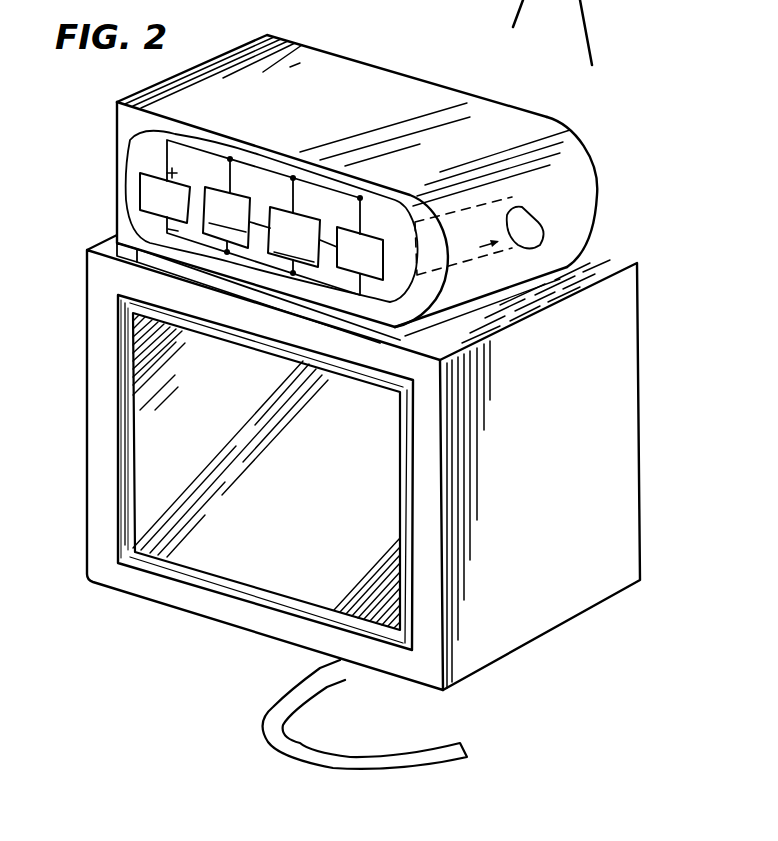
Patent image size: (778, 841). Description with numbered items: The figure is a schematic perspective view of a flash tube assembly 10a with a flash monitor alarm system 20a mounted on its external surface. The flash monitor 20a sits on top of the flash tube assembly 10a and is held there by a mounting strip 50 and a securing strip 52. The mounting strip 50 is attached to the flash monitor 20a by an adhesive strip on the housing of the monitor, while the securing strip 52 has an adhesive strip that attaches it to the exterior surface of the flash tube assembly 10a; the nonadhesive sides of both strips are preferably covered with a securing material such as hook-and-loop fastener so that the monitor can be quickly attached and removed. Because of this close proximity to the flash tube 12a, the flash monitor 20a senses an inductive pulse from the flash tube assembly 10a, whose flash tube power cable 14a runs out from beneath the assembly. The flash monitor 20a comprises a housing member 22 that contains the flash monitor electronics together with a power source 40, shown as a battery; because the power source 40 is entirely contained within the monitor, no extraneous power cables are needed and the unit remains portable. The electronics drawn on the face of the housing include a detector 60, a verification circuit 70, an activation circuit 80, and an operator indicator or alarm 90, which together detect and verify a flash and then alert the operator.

The flash tube assembly 10a is at (575, 626).
The flash tube 12a is at (207, 556).
The flash tube power cable 14a is at (350, 748).
The flash monitor alarm system 20a is at (470, 33).
The housing member 22 is at (503, 127).
The power source 40 is at (140, 193).
The mounting strip 50 is at (577, 281).
The securing strip 52 is at (120, 268).
The detector 60 is at (226, 217).
The verification circuit 70 is at (294, 237).
The activation circuit 80 is at (360, 253).
The operator indicator or alarm 90 is at (577, 198).